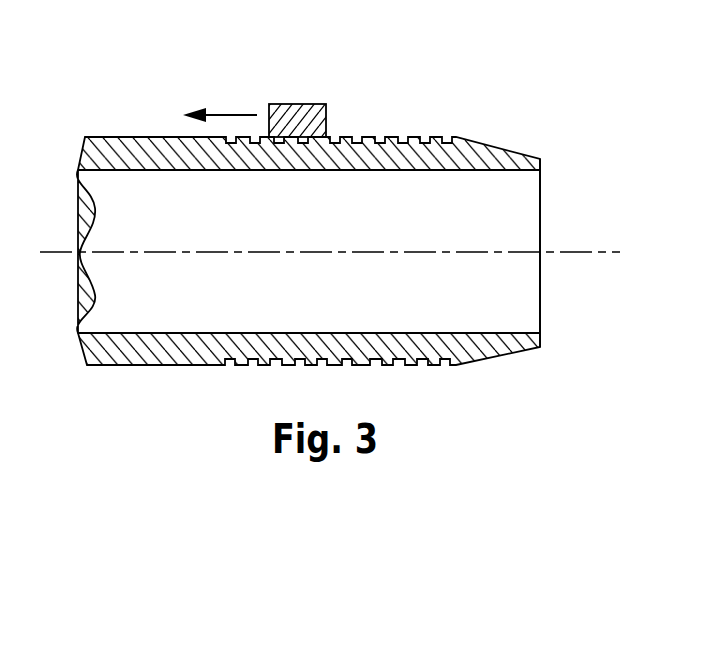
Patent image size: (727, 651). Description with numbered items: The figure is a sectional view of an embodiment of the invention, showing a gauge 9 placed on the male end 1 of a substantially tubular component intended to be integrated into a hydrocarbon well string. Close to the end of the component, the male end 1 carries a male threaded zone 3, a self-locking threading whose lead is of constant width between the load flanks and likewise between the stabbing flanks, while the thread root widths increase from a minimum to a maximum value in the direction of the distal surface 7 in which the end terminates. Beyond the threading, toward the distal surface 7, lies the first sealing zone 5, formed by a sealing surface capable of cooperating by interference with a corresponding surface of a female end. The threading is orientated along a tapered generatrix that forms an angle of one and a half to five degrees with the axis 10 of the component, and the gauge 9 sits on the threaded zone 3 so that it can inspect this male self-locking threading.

The male end 1 is at (129, 113).
The male threaded zone 3 is at (371, 127).
The first sealing zone 5 is at (488, 134).
The distal surface 7 is at (541, 163).
The gauge 9 is at (300, 87).
The axis 10 is at (578, 252).